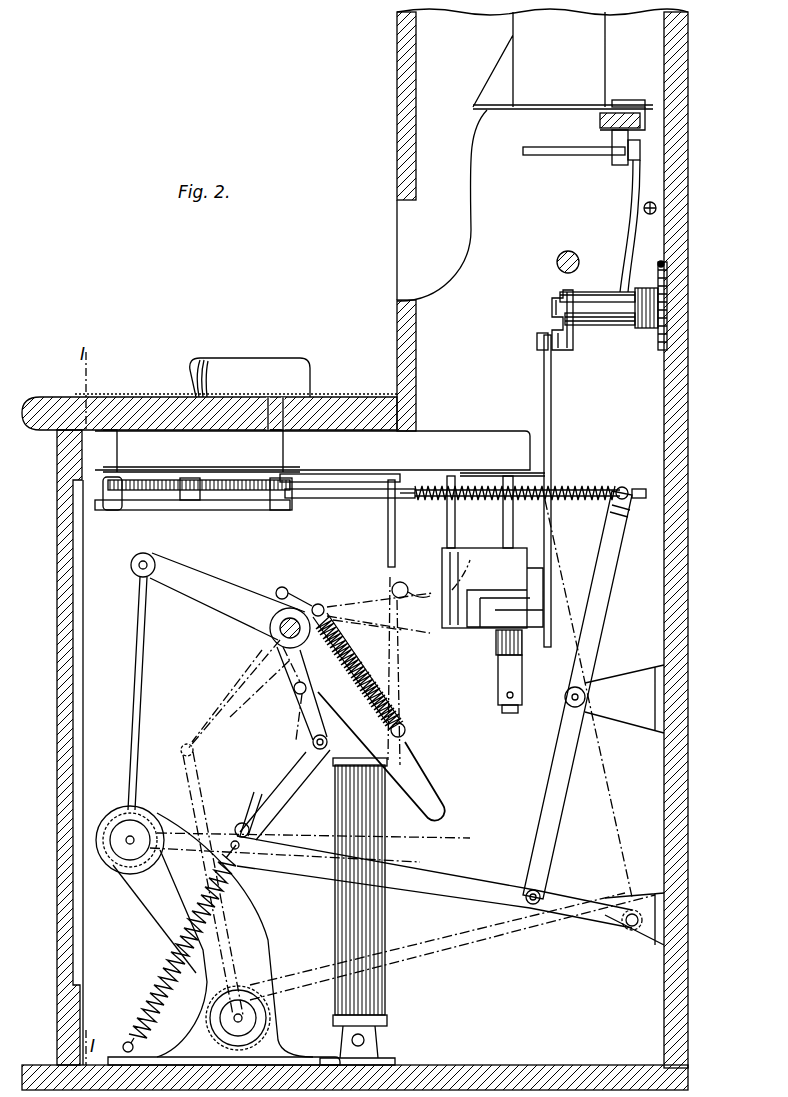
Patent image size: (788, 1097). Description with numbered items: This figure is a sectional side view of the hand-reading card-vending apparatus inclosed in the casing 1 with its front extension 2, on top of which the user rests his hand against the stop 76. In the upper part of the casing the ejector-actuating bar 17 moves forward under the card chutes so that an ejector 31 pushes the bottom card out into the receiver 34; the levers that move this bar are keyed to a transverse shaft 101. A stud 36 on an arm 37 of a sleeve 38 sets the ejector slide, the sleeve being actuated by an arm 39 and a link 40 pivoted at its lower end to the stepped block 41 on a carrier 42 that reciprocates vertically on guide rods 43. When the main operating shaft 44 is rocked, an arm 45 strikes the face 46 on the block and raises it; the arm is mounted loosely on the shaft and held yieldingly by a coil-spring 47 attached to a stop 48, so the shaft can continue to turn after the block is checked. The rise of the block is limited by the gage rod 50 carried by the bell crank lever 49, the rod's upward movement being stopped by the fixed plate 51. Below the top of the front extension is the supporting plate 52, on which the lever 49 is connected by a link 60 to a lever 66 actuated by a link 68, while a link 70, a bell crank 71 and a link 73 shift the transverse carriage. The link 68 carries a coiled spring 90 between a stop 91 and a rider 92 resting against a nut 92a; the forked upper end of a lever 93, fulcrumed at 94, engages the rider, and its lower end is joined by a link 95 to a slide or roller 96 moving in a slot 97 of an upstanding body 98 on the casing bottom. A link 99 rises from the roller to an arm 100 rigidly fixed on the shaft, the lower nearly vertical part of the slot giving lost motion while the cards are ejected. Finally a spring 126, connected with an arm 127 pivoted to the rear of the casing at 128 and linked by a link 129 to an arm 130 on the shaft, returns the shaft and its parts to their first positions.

The casing 1 is at (676, 516).
The front extension 2 is at (58, 516).
The ejector-actuating bar 17 is at (598, 118).
The ejector 31 is at (620, 100).
The receiver 34 is at (525, 221).
The stud 36 is at (580, 157).
The arm 37 is at (626, 211).
The sleeve 38 is at (602, 325).
The arm 39 is at (552, 325).
The link 40 is at (544, 378).
The block 41 is at (530, 578).
The carrier 42 is at (442, 560).
The guide rods 43 is at (503, 520).
The main operating shaft 44 is at (270, 630).
The arm 45 is at (438, 818).
The face 46 is at (498, 668).
The coil-spring 47 is at (392, 682).
The stop 48 is at (320, 604).
The bell crank lever 49 is at (372, 500).
The gage rod 50 is at (395, 527).
The fixed plate 51 is at (498, 473).
The supporting plate 52 is at (312, 450).
The link 60 is at (236, 480).
The lever 66 is at (282, 512).
The link 68 is at (345, 500).
The link 70 is at (168, 510).
The bell crank 71 is at (106, 510).
The link 73 is at (200, 500).
The stop 76 is at (250, 377).
The coiled spring 90 is at (442, 485).
The stop 91 is at (412, 485).
The rider 92 is at (624, 486).
The nut 92a is at (634, 525).
The lever 93 is at (604, 578).
The fulcrum 94 is at (564, 701).
The link 95 is at (293, 868).
The slide or roller 96 is at (120, 862).
The slot 97 is at (224, 939).
The upstanding body 98 is at (152, 930).
The link 99 is at (128, 730).
The arm 100 is at (208, 588).
The transverse shaft 101 is at (557, 262).
The spring 126 is at (180, 972).
The arm 127 is at (270, 842).
The pivot 128 is at (630, 928).
The link 129 is at (298, 774).
The arm 130 is at (294, 688).